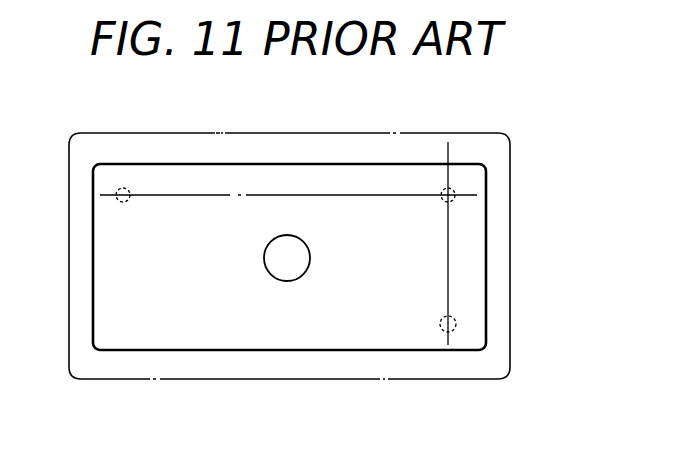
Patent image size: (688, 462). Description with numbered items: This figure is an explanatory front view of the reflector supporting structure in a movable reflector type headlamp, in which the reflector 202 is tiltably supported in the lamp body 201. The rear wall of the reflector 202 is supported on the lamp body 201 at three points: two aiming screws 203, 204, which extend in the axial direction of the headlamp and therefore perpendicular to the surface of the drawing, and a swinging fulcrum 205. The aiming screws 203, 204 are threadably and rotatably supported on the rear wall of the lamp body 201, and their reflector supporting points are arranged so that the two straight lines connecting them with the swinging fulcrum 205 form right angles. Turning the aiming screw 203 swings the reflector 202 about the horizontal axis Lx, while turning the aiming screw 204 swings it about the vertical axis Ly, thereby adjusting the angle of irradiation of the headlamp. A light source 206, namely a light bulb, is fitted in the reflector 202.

The lamp body 201 is at (510, 176).
The reflector 202 is at (130, 350).
The aiming screw 203 is at (123, 188).
The aiming screw 204 is at (455, 331).
The swinging fulcrum 205 is at (450, 188).
The light source 206 is at (291, 281).
The horizontal axis Lx is at (290, 195).
The vertical axis Ly is at (448, 258).